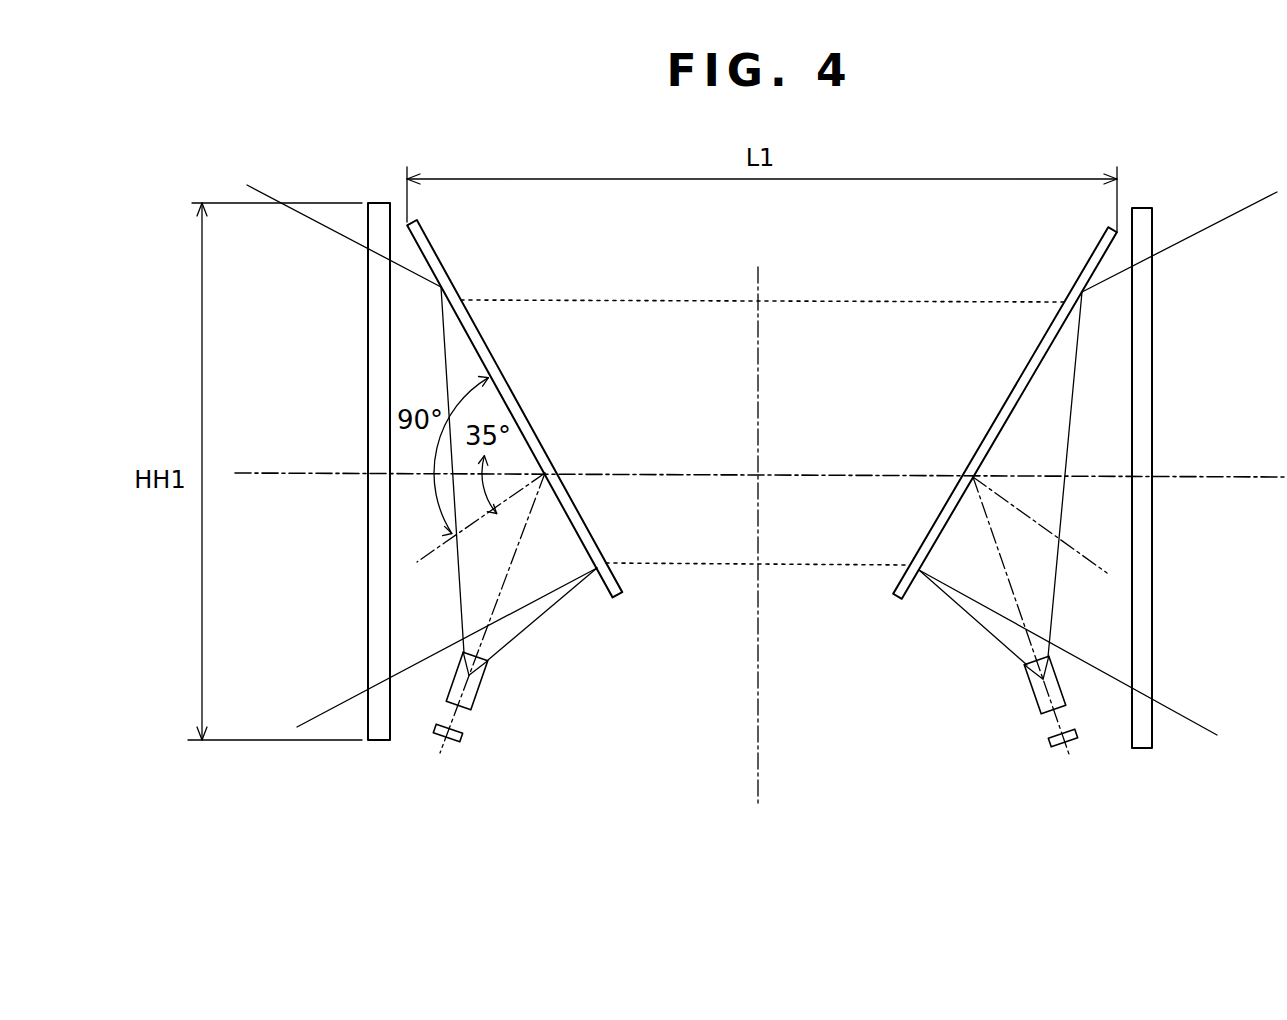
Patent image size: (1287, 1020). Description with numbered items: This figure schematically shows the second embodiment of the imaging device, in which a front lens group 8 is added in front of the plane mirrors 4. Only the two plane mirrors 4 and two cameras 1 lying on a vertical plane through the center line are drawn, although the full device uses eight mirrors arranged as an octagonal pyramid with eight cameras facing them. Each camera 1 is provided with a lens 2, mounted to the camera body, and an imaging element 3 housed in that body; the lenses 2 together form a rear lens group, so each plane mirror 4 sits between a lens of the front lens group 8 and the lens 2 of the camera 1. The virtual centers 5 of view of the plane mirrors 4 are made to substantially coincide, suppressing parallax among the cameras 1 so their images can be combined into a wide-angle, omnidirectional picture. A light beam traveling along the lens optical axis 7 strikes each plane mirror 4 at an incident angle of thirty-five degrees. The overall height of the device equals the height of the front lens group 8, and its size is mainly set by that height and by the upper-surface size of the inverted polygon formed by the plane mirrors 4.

The camera 1 is at (755, 714).
The lens 2 is at (478, 690).
The imaging element 3 is at (755, 745).
The plane mirror 4 is at (482, 337).
The virtual center of view 5 is at (762, 473).
The lens optical axis 7 is at (267, 478).
The front lens group 8 is at (380, 202).